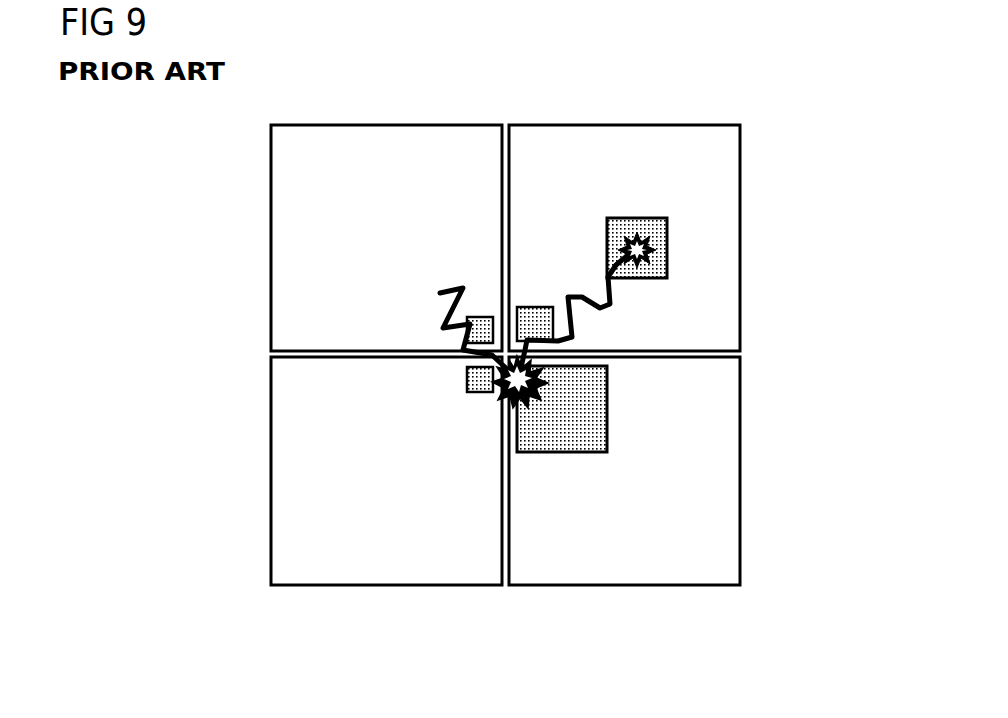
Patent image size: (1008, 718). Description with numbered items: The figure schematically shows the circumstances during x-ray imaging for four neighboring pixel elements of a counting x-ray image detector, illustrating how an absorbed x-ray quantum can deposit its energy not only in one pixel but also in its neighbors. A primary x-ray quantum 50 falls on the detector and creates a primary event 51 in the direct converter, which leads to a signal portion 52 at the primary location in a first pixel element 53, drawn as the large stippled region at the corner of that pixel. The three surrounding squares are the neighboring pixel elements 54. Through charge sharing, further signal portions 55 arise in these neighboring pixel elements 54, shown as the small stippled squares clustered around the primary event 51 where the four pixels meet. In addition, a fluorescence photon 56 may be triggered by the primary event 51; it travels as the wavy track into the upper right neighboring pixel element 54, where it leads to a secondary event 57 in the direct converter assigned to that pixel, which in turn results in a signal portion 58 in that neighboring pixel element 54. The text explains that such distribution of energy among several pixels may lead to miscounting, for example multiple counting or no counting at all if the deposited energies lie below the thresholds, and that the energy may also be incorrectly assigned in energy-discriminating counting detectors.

The primary x-ray quantum 50 is at (445, 290).
The primary event 51 is at (500, 393).
The signal portion 52 is at (588, 427).
The first pixel element 53 is at (727, 410).
The neighboring pixel element 54 is at (723, 142).
The further signal portion 55 is at (540, 307).
The fluorescence photon 56 is at (610, 305).
The secondary event 57 is at (628, 245).
The signal portion 58 is at (667, 228).